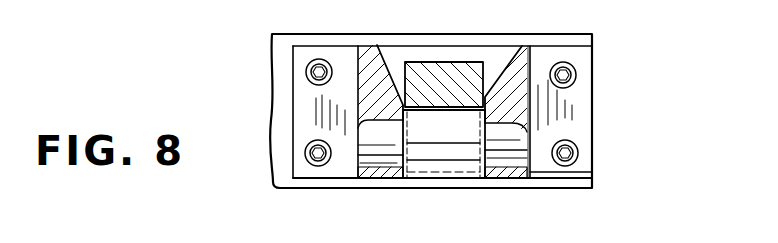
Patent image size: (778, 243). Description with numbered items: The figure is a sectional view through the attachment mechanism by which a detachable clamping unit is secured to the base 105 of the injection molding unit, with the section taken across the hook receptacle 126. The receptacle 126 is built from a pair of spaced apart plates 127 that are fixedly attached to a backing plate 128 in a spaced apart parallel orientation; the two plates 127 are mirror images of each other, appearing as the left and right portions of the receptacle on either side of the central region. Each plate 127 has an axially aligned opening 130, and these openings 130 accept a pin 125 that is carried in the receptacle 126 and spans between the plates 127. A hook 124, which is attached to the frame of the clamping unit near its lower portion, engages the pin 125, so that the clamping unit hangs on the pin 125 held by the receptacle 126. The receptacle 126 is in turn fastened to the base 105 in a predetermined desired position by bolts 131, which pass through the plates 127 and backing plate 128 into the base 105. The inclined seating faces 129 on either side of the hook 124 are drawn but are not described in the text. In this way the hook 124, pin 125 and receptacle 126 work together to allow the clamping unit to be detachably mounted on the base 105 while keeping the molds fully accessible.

The base 105 is at (266, 75).
The hook 124 is at (422, 75).
The pin 125 is at (533, 138).
The hook receptacle 126 is at (598, 68).
The plates 127 is at (358, 166).
The backing plate 128 is at (313, 112).
The inclined groove face 129 is at (405, 97).
The openings 130 is at (358, 131).
The bolts 131 is at (307, 67).